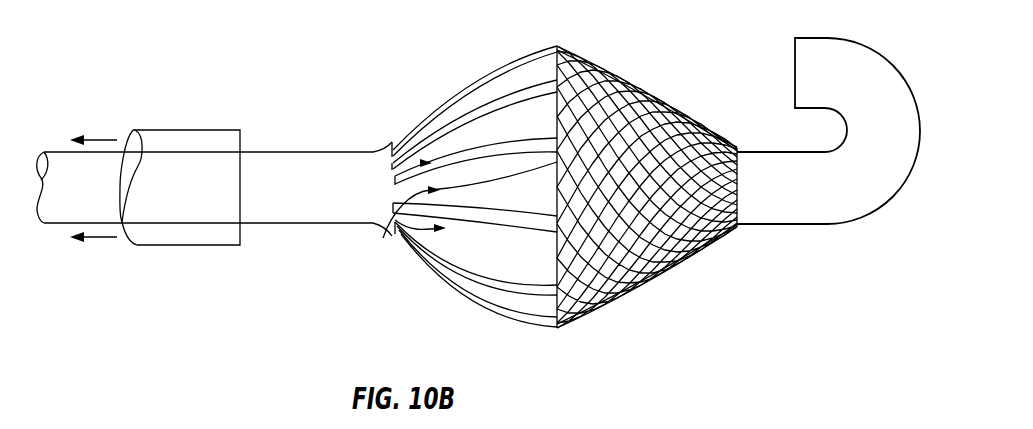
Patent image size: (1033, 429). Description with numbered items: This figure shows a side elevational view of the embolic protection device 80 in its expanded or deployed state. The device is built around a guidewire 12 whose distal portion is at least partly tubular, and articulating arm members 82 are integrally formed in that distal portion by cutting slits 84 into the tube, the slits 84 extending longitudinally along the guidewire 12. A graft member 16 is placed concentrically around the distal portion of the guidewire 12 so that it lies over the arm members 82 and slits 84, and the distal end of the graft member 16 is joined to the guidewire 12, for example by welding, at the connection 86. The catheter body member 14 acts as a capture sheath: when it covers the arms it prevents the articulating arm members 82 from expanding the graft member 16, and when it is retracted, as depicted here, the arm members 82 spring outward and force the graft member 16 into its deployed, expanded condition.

The embolic protection device 80 is at (263, 58).
The guidewire 12 is at (343, 151).
The catheter body member 14 is at (183, 130).
The articulating arm members 82 is at (475, 108).
The slits 84 is at (394, 185).
The graft member 16 is at (668, 102).
The connection 86 is at (737, 148).